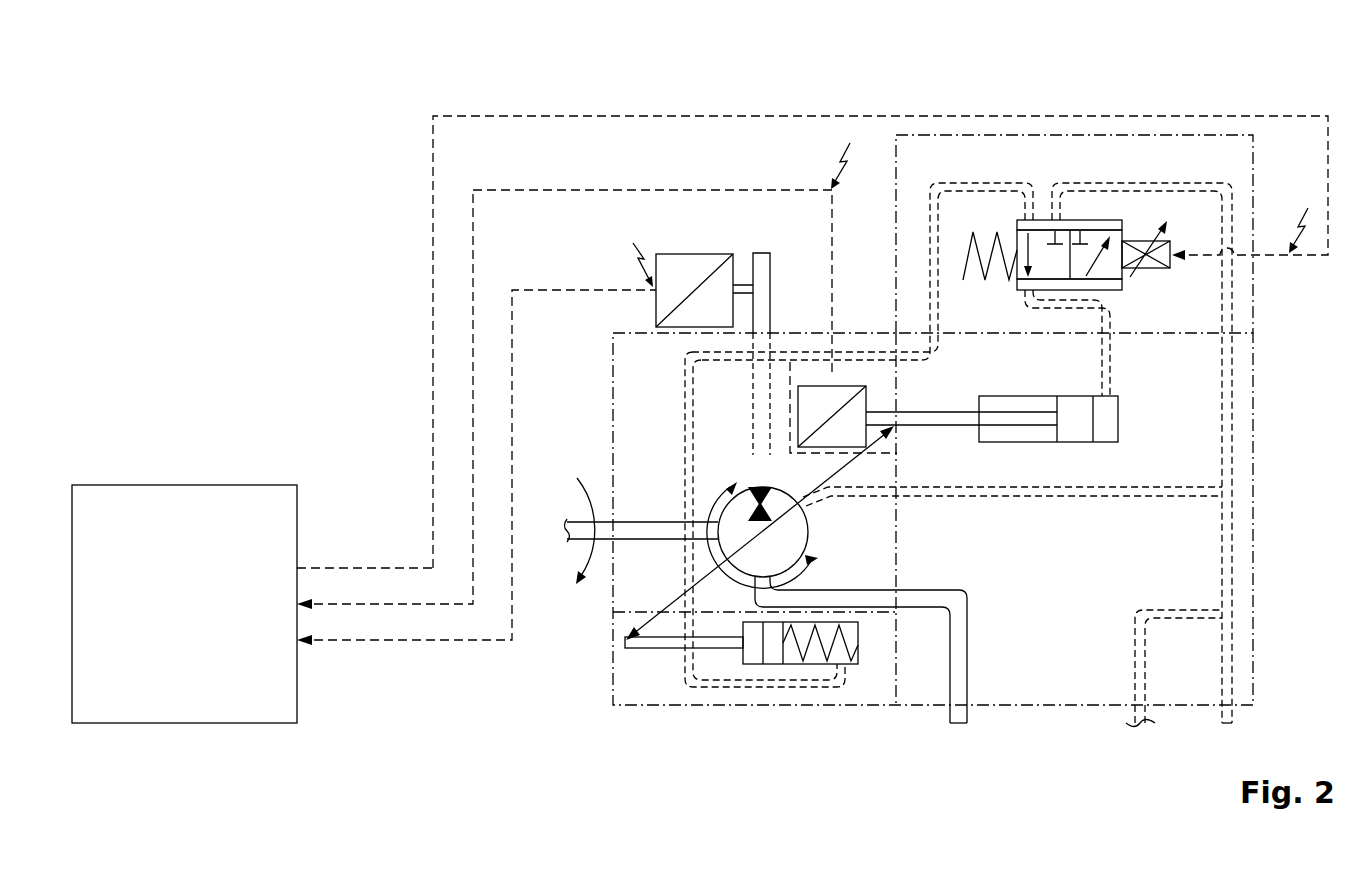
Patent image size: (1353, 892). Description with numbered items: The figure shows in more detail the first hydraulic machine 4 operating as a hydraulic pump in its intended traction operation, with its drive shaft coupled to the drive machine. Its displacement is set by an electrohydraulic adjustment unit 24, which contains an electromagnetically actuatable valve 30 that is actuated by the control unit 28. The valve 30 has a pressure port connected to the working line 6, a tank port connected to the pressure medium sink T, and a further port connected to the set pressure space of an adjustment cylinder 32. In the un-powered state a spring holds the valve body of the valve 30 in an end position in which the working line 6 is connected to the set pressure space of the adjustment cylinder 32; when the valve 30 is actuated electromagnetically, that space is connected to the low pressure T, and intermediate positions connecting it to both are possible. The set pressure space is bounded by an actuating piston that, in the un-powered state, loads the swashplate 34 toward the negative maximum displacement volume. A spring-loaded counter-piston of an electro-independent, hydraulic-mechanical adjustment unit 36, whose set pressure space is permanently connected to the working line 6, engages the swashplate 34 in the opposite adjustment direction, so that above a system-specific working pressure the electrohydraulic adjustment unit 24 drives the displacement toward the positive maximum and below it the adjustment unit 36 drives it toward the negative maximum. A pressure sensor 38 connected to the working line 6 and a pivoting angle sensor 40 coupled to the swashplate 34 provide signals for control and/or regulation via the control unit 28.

The first hydraulic machine 4 is at (232, 114).
The working line 6 is at (770, 293).
The electrohydraulic adjustment unit 24 is at (1070, 134).
The control unit 28 is at (364, 456).
The electromagnetically actuatable valve 30 is at (1107, 170).
The adjustment cylinder 32 is at (1075, 443).
The swashplate 34 is at (672, 603).
The hydraulic-mechanical adjustment unit 36 is at (757, 707).
The pressure sensor 38 is at (693, 254).
The pivoting angle sensor 40 is at (866, 394).